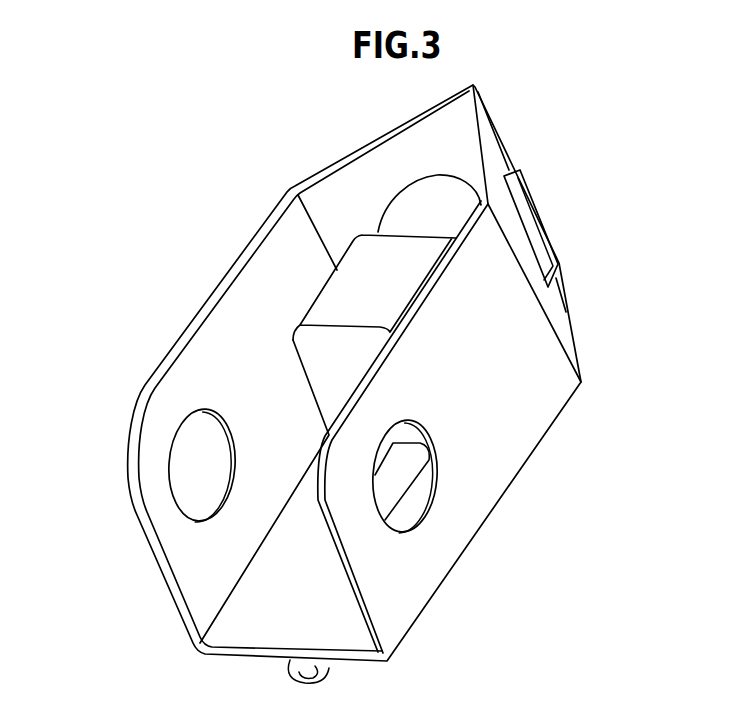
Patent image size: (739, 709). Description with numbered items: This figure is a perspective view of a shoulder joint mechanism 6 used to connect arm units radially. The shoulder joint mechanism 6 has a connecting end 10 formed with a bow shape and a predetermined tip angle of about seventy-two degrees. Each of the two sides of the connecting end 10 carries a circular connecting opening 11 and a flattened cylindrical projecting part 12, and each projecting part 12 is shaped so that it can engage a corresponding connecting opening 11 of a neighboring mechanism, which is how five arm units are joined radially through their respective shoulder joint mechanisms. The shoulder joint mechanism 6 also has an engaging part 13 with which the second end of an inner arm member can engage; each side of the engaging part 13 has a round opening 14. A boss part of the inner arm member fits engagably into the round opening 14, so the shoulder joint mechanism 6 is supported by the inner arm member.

The shoulder joint mechanism 6 is at (529, 468).
The connecting end 10 is at (562, 306).
The connecting opening 11 is at (433, 178).
The projecting part 12 is at (543, 218).
The engaging part 13 is at (315, 570).
The round opening 14 is at (222, 488).